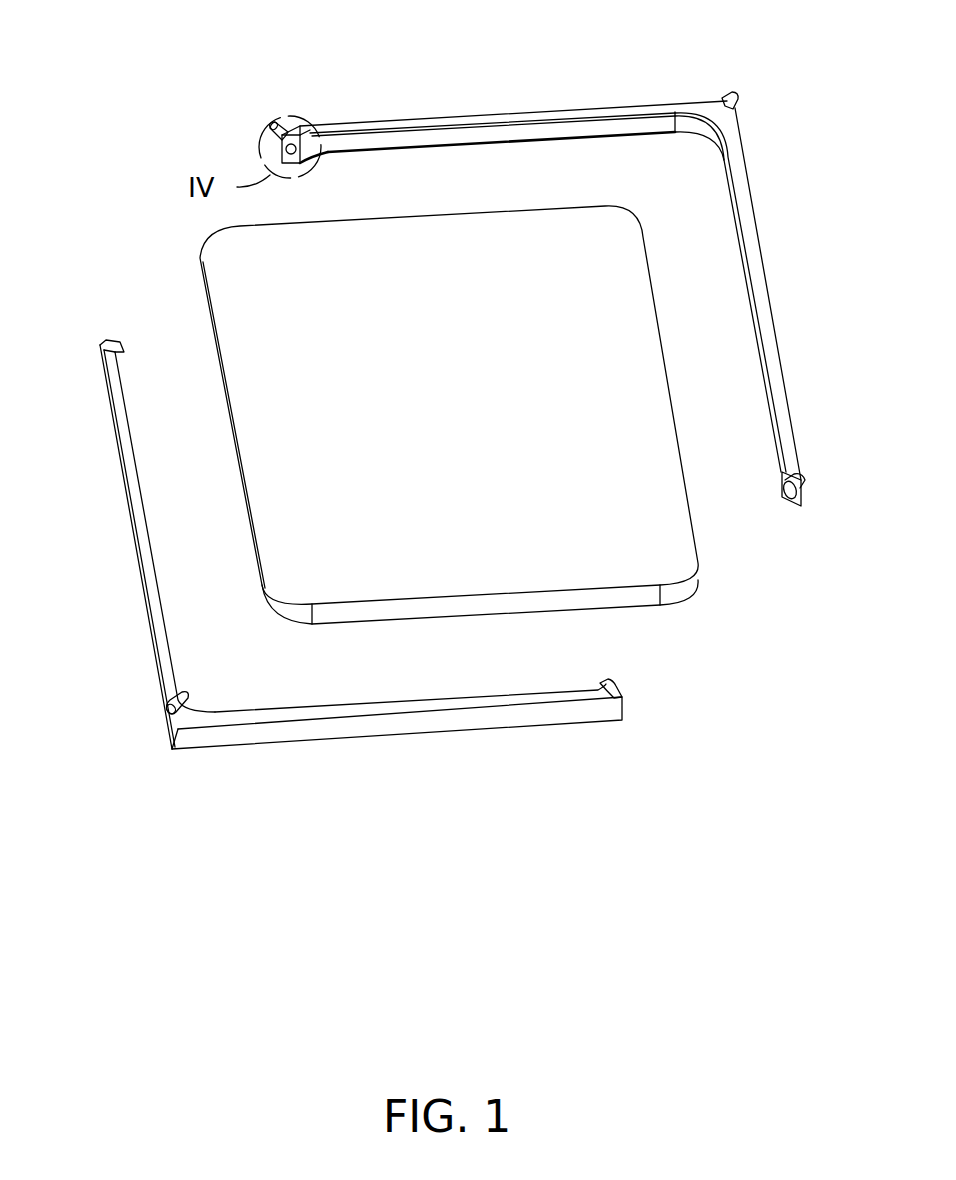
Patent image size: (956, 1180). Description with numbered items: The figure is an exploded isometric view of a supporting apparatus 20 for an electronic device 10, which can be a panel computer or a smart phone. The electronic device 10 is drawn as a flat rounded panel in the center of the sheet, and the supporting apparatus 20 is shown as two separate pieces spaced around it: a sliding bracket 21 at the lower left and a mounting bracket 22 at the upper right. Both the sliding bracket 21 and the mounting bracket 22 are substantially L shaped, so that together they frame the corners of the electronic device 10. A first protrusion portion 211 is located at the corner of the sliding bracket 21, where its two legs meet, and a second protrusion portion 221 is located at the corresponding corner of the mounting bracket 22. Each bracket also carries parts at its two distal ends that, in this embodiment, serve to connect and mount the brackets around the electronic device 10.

The electronic device 10 is at (670, 557).
The supporting apparatus 20 is at (228, 14).
The sliding bracket 21 is at (343, 483).
The mounting bracket 22 is at (531, 264).
The first protrusion portion 211 is at (170, 709).
The second protrusion portion 221 is at (735, 94).